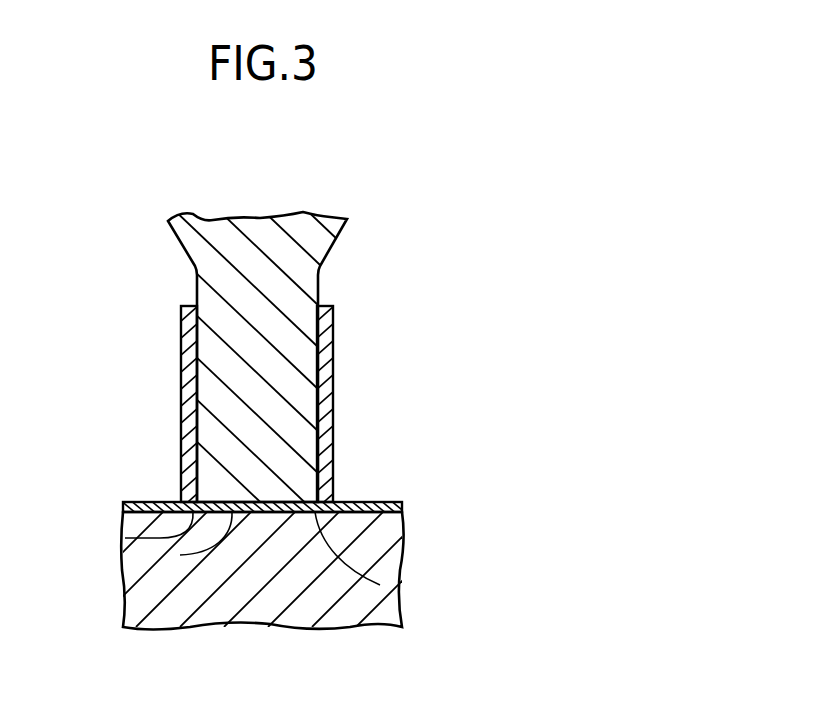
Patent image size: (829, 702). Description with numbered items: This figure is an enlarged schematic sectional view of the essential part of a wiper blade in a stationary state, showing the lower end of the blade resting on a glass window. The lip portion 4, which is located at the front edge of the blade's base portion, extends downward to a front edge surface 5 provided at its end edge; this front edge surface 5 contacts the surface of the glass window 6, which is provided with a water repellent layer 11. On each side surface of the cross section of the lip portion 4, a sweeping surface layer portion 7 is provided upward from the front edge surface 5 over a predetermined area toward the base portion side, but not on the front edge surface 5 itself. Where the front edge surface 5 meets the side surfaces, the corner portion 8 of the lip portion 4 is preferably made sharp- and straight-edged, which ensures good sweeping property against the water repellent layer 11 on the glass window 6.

The lip portion 4 is at (212, 362).
The front edge surface 5 is at (180, 555).
The glass window 6 is at (392, 560).
The sweeping surface layer portion 7 is at (188, 417).
The corner portion 8 is at (125, 538).
The water repellent layer 11 is at (365, 501).